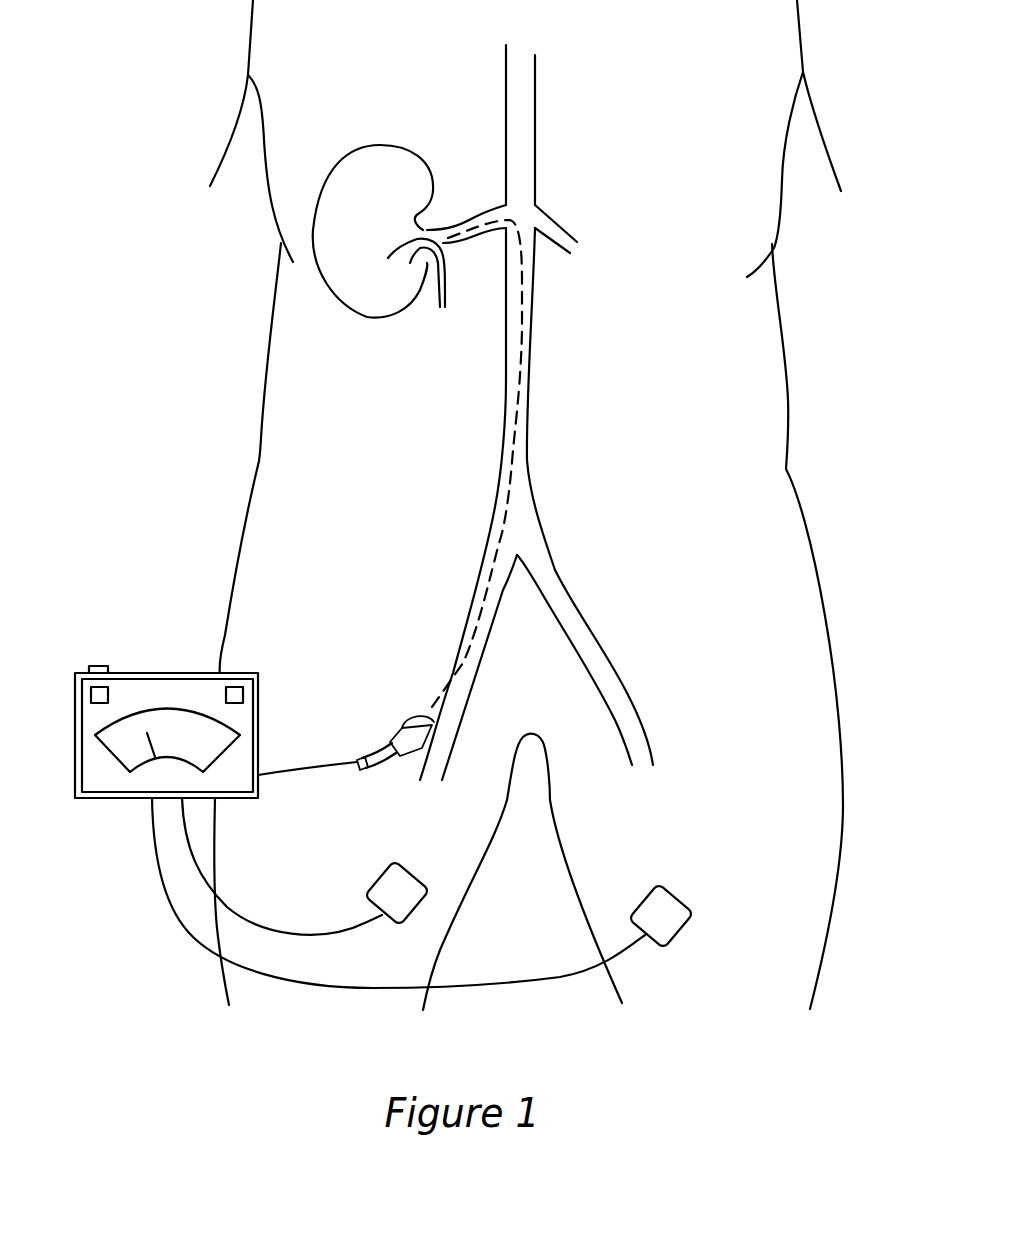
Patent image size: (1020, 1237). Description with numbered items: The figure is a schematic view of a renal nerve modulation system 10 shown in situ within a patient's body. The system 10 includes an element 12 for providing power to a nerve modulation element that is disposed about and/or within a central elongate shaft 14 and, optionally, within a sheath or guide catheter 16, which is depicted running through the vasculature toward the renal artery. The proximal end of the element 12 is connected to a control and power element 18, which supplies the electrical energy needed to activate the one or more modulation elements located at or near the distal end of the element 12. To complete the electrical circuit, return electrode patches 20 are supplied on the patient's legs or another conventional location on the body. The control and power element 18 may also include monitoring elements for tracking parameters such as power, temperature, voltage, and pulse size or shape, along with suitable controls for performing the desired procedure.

The renal nerve modulation system 10 is at (312, 662).
The element for providing power 12 is at (298, 772).
The central elongate shaft 14 is at (363, 765).
The sheath or guide catheter 16 is at (396, 740).
The control and power element 18 is at (168, 683).
The return electrode patches 20 is at (393, 877).